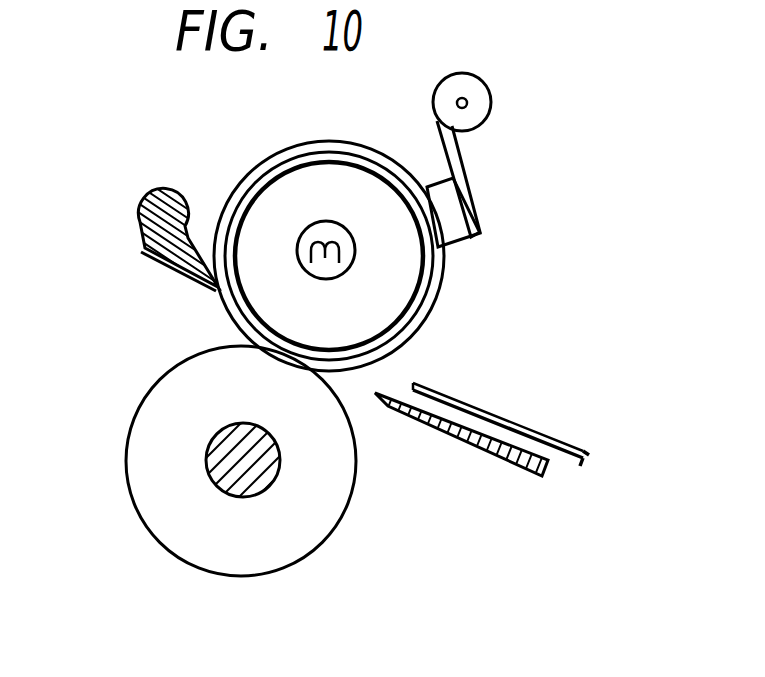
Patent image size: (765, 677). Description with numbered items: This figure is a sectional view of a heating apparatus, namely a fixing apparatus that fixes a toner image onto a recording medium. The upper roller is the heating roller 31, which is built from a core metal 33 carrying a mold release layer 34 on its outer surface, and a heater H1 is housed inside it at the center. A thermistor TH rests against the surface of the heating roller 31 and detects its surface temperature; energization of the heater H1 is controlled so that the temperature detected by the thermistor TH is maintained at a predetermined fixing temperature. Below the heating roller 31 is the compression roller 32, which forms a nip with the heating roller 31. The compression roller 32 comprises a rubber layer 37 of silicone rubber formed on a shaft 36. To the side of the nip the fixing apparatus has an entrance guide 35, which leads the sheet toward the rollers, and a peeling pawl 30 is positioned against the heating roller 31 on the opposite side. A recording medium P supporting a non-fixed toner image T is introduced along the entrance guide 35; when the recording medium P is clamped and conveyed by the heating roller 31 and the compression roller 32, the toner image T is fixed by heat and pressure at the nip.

The peeling pawl 30 is at (143, 230).
The heating roller 31 is at (403, 280).
The compression roller 32 is at (210, 487).
The core metal 33 is at (285, 165).
The mold release layer 34 is at (320, 142).
The entrance guide 35 is at (520, 470).
The shaft 36 is at (217, 490).
The rubber layer 37 is at (146, 497).
The heater H1 is at (298, 237).
The thermistor TH is at (463, 217).
The non-fixed toner image T is at (527, 430).
The recording medium P is at (575, 447).